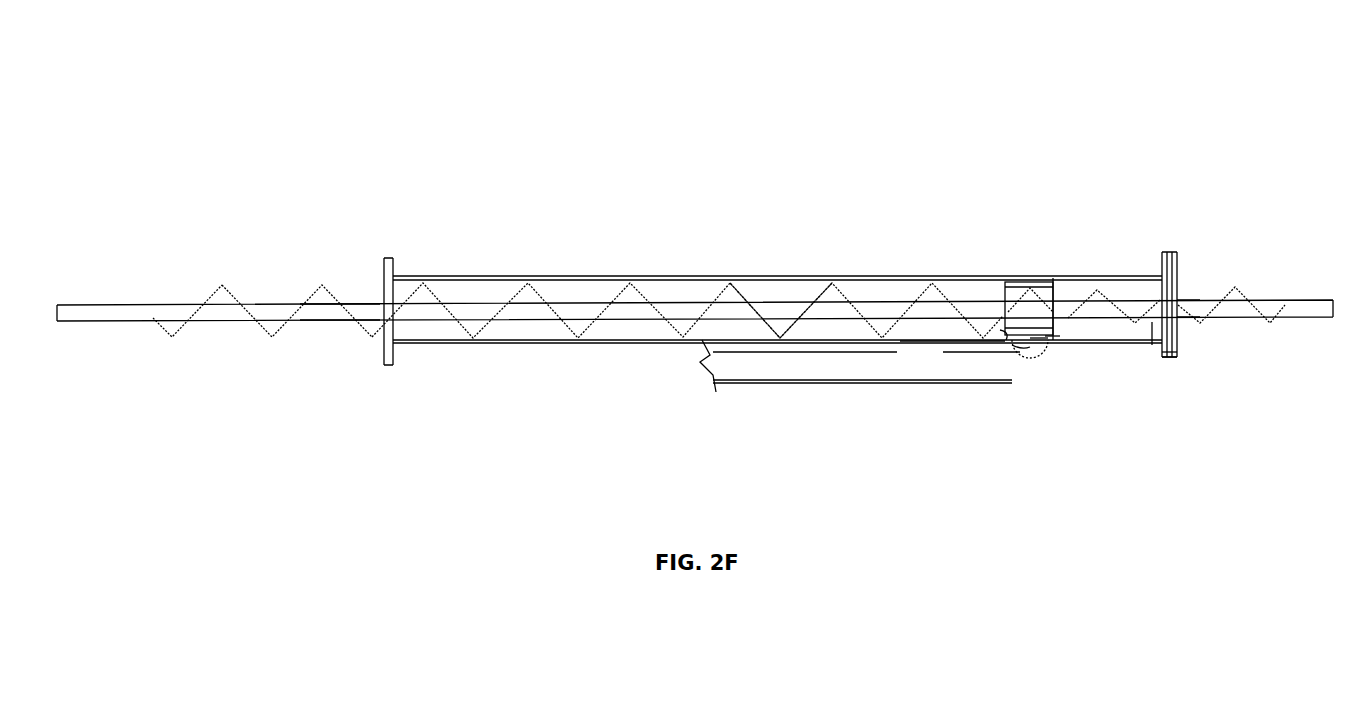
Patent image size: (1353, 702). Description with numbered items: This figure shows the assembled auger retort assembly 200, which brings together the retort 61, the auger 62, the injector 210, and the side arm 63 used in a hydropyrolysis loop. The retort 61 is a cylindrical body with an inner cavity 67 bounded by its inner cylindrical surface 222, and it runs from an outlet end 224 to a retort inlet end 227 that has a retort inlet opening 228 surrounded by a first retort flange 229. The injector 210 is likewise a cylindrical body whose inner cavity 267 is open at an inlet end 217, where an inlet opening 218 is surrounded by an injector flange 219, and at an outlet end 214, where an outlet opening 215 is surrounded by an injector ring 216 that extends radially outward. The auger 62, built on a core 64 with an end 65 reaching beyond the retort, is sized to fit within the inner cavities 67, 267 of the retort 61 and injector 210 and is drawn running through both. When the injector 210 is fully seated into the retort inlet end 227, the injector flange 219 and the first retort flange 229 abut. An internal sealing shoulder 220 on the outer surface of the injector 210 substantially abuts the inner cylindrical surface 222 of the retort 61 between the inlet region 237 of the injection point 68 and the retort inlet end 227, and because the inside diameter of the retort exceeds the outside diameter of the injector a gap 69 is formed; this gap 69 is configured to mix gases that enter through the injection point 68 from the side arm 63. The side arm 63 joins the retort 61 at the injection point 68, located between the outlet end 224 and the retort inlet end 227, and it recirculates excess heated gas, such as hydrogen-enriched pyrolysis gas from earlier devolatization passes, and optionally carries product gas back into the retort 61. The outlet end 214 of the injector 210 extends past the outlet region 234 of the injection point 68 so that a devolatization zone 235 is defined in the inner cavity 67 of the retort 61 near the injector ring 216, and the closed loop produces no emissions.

The auger retort assembly 200 is at (230, 107).
The core 64 is at (116, 313).
The auger 62 is at (228, 289).
The distal end of wire 65 is at (166, 332).
The outlet end 224 is at (334, 348).
The outlet opening 215 is at (398, 322).
The retort 61 is at (485, 278).
The inner cylindrical surface 222 is at (540, 323).
The inner cavity 67 is at (775, 290).
The side arm 63 is at (850, 390).
The outlet end 214 is at (990, 239).
The gap 69 is at (1022, 282).
The internal sealing shoulder 220 is at (1053, 318).
The devolatization zone 235 is at (942, 330).
The injector ring 216 is at (1001, 332).
The outlet region 234 is at (1022, 339).
The injection point 68 is at (1035, 338).
The inlet region 237 is at (1050, 337).
The injector 210 is at (1144, 266).
The inlet end 217 is at (1182, 277).
The retort inlet end 227 is at (1169, 304).
The inlet opening 218 is at (1175, 325).
The retort inlet opening 228 is at (1188, 308).
The injector flange 219 is at (1178, 357).
The first retort flange 229 is at (1167, 357).
The inner cavity 267 is at (1152, 322).